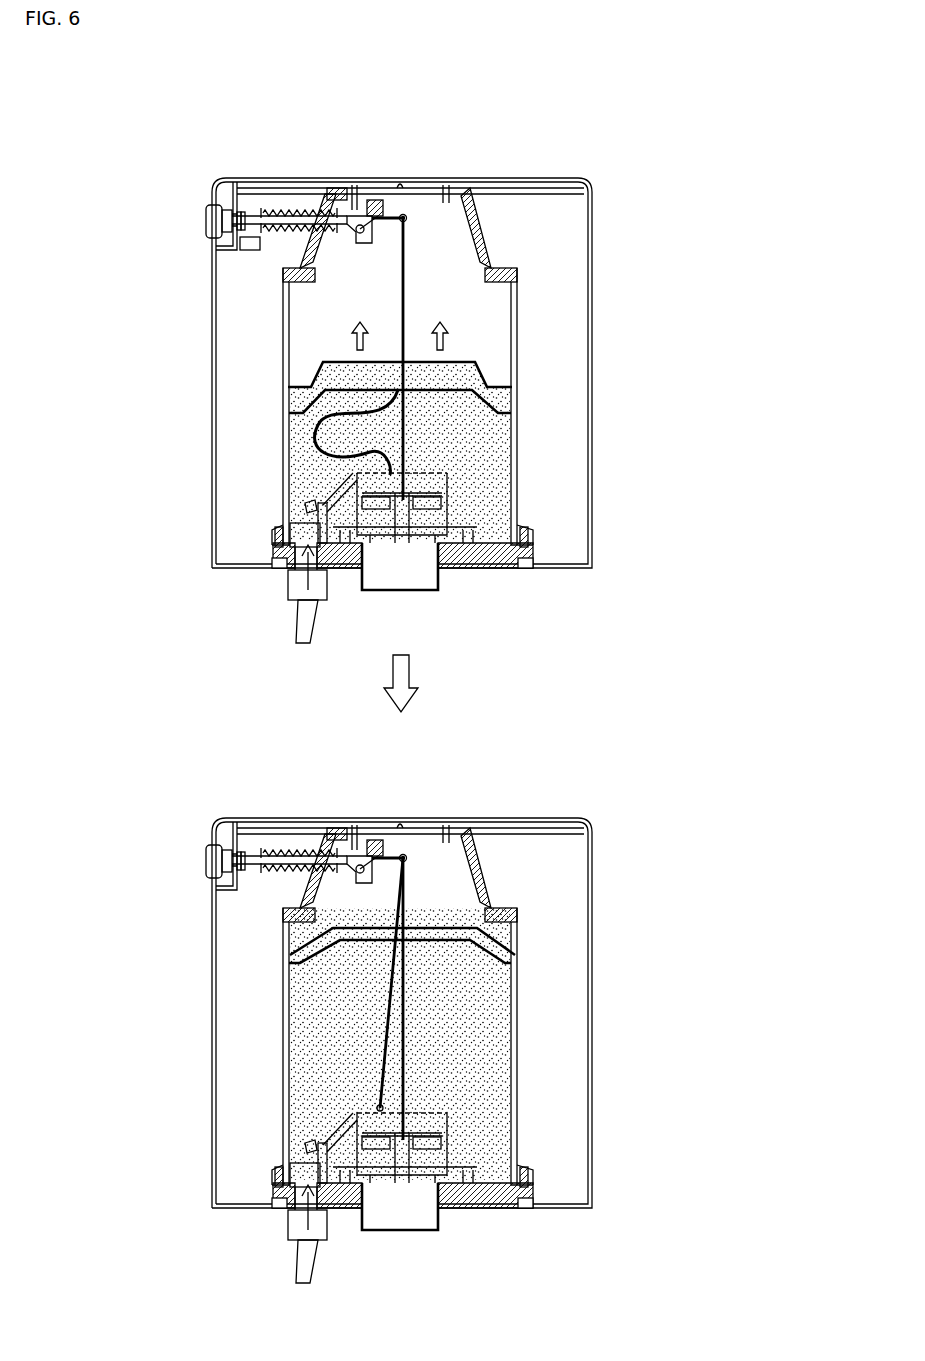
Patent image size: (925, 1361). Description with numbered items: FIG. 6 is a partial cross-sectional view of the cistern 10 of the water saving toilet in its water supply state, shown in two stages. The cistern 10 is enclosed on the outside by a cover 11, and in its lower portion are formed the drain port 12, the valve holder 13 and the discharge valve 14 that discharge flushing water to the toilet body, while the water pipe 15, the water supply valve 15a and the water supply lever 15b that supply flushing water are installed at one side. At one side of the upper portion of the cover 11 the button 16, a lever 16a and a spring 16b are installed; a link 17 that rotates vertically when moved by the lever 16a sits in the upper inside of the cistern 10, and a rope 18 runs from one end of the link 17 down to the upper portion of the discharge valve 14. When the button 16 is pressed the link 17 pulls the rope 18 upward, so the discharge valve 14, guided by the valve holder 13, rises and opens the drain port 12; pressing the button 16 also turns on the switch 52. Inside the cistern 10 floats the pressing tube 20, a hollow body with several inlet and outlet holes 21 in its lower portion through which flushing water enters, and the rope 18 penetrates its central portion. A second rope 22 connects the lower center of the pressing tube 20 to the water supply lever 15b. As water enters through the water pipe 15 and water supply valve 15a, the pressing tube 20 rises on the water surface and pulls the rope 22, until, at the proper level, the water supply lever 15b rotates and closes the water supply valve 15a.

The cistern 10 is at (283, 333).
The cover 11 is at (212, 480).
The drain port 12 is at (425, 573).
The valve holder 13 is at (450, 505).
The discharge valve 14 is at (418, 485).
The water pipe 15 is at (300, 627).
The water supply valve 15a is at (290, 530).
The water supply lever 15b is at (305, 503).
The button 16 is at (207, 218).
The lever 16a is at (275, 222).
The spring 16b is at (300, 208).
The link 17 is at (398, 212).
The rope 18 is at (375, 318).
The pressing tube 20 is at (283, 388).
The inlet and outlet holes 21 is at (462, 372).
The rope 22 is at (300, 440).
The switch 52 is at (250, 240).